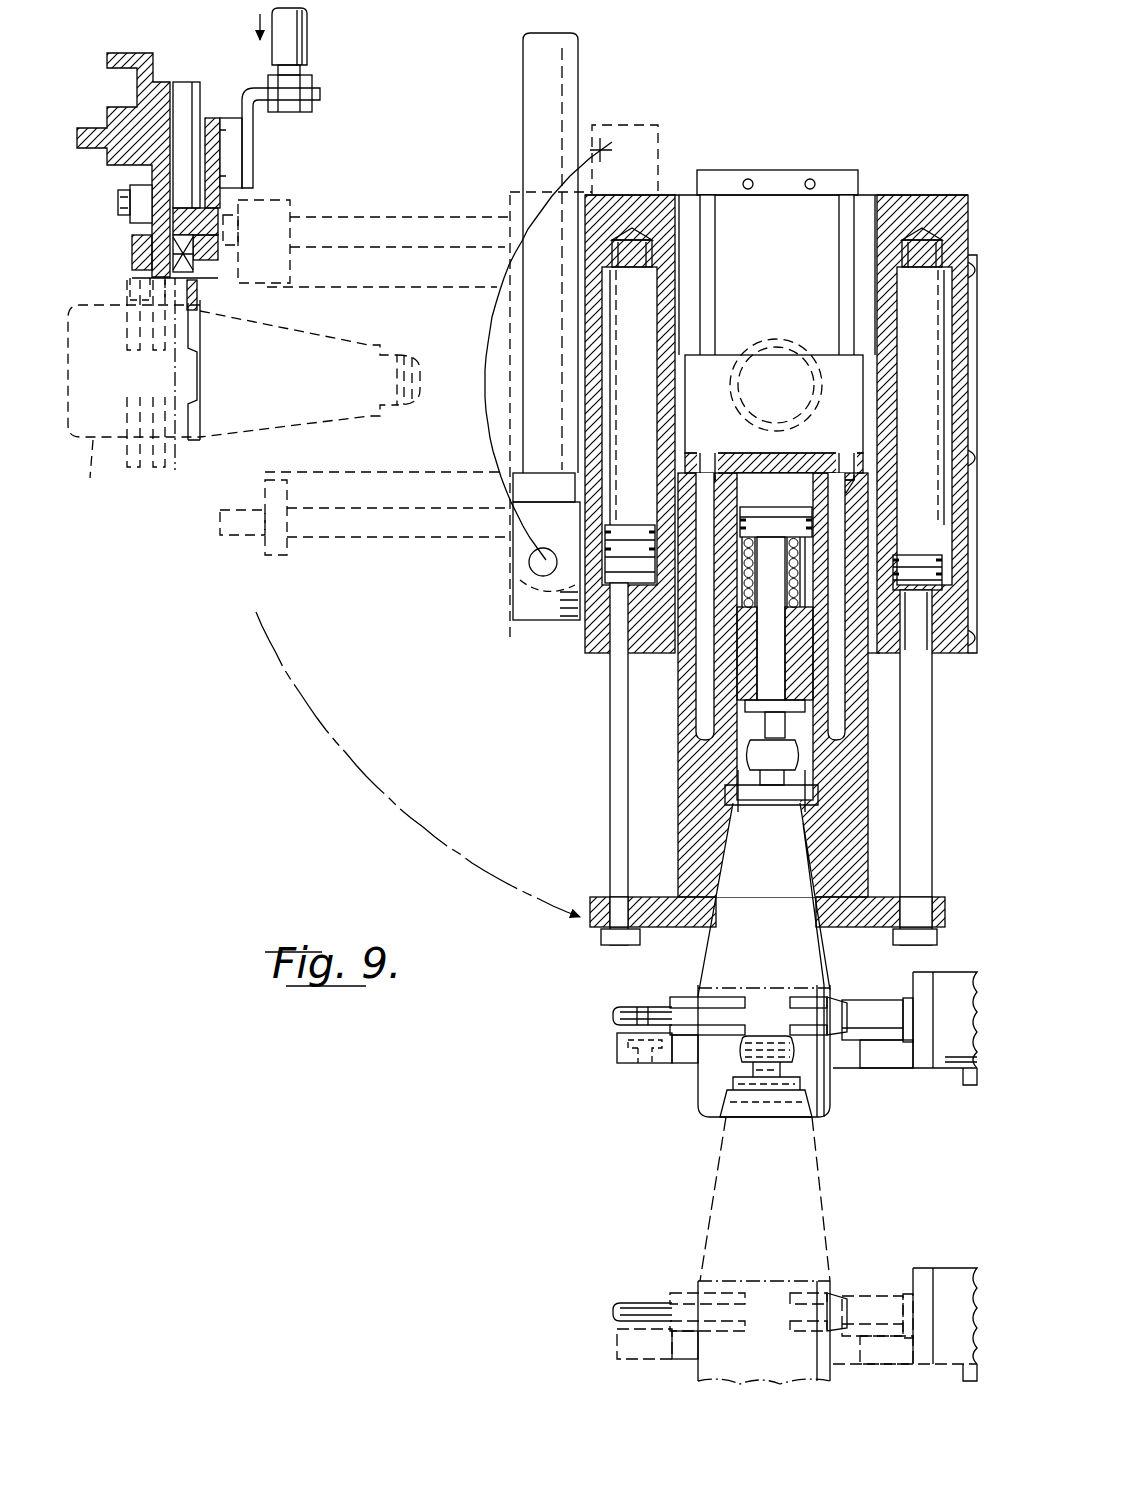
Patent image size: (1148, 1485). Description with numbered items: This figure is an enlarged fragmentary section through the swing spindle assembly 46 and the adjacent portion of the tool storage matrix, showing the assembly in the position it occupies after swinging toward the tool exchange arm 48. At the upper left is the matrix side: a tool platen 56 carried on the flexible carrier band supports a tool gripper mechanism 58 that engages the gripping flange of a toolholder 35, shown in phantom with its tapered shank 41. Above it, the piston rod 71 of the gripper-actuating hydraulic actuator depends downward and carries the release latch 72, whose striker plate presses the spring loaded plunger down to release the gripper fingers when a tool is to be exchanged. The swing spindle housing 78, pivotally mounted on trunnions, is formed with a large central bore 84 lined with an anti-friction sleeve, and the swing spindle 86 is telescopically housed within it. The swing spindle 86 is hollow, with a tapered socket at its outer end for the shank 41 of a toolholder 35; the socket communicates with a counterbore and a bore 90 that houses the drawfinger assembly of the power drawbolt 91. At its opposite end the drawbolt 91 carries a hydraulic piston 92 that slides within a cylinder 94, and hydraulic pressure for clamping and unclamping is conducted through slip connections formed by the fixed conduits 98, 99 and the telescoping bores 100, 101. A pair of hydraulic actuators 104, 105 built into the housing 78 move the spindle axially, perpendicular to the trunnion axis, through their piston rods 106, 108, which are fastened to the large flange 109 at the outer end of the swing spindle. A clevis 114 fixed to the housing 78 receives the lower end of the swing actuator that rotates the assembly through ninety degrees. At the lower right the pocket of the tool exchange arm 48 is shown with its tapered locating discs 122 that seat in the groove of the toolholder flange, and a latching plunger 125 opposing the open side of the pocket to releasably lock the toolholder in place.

The piston rod 71 is at (307, 46).
The release latch 72 is at (253, 158).
The tool platen 56 is at (96, 152).
The tool gripper mechanism 58 is at (128, 262).
The toolholder 35 is at (698, 1083).
The swing spindle housing 78 is at (228, 478).
The central bore 84 is at (693, 198).
The hydraulic actuator 104 is at (650, 303).
The hydraulic actuator 105 is at (893, 276).
The fixed conduit 99 is at (838, 321).
The fixed conduit 98 is at (714, 325).
The cylinder 94 is at (752, 473).
The hydraulic piston 92 is at (812, 440).
The power drawbolt 91 is at (758, 640).
The bore 90 is at (806, 708).
The telescoping bore 100 is at (705, 722).
The telescoping bore 101 is at (840, 715).
The piston rod 106 is at (613, 786).
The piston rod 108 is at (919, 813).
The swing spindle 86 is at (678, 838).
The tapered shank 41 is at (790, 918).
The flange 109 is at (699, 932).
The latching plunger 125 is at (889, 1004).
The locating disc 122 is at (613, 1014).
The tool exchange arm 48 is at (614, 1066).
The clevis 114 is at (523, 622).
The swing spindle assembly 46 is at (580, 672).